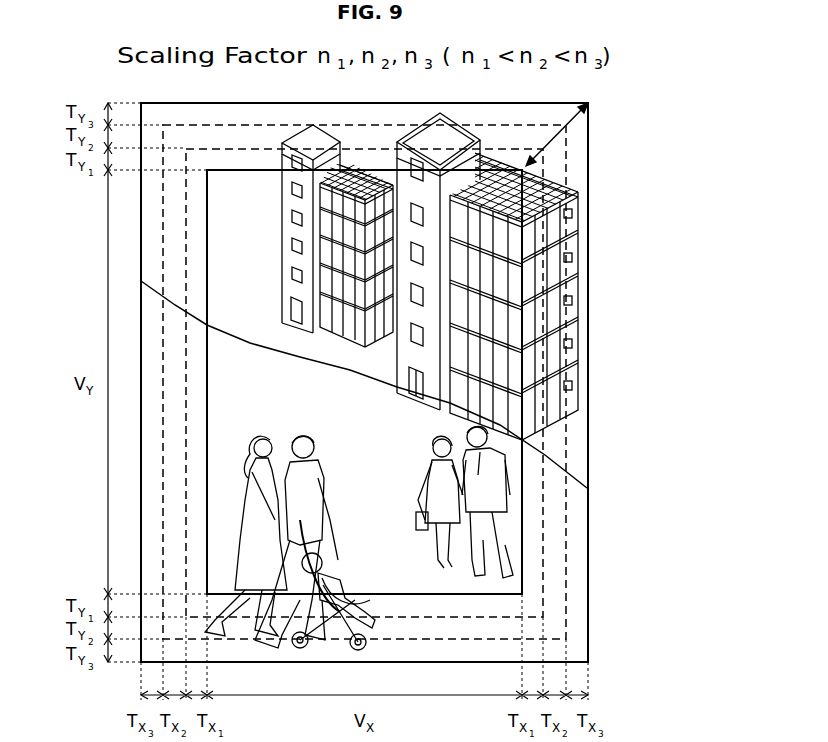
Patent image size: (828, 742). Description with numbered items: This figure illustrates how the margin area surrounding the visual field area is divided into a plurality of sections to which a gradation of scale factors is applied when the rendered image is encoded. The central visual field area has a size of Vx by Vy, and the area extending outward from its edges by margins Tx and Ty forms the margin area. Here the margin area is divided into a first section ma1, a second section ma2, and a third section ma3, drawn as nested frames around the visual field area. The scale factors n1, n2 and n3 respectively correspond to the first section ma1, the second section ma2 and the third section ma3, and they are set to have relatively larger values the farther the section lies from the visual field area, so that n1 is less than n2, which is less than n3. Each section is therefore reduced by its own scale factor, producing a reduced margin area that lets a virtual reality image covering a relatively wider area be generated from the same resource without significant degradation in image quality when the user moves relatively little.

The first section ma1 is at (532, 560).
The second section ma2 is at (555, 507).
The third section ma3 is at (578, 448).